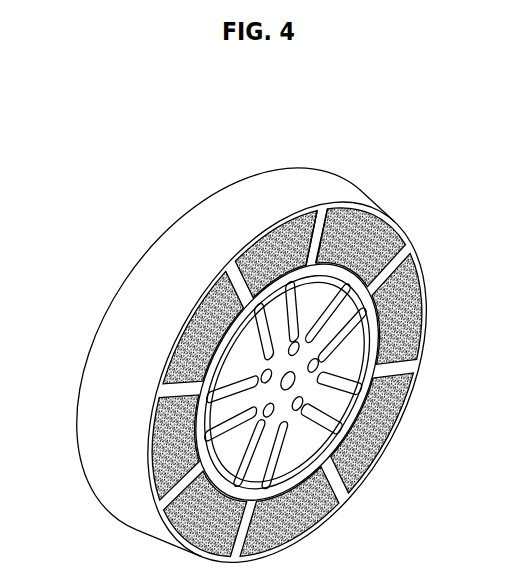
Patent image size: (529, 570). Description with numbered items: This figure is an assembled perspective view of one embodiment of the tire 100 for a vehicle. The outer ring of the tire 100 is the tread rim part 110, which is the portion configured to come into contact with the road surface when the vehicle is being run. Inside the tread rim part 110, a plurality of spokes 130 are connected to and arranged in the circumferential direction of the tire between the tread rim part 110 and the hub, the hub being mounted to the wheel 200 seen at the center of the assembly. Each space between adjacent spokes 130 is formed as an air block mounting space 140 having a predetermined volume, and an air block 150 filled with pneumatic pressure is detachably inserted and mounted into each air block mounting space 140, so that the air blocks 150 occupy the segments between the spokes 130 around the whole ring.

The tire 100 is at (137, 229).
The tread rim part 110 is at (273, 182).
The spokes 130 is at (283, 373).
The air block mounting space 140 is at (316, 237).
The air block 150 is at (356, 245).
The wheel 200 is at (287, 383).